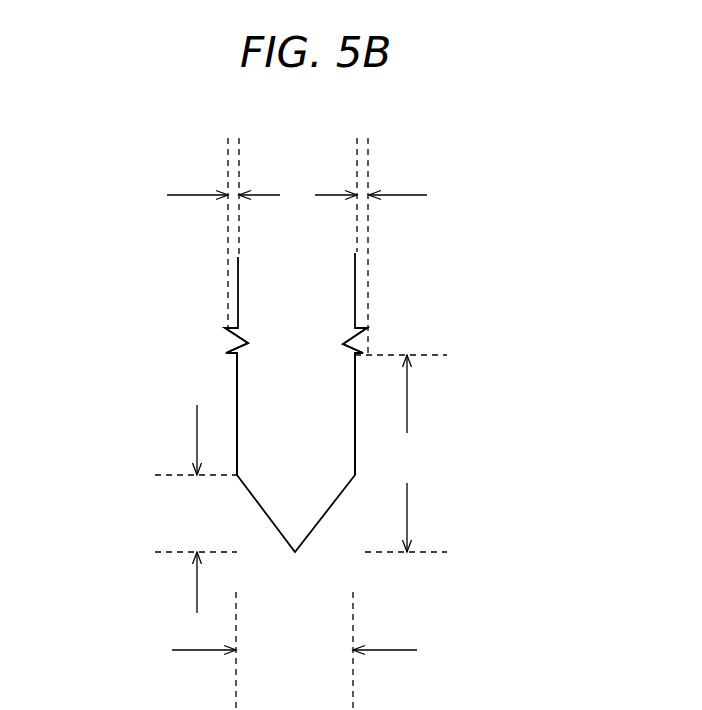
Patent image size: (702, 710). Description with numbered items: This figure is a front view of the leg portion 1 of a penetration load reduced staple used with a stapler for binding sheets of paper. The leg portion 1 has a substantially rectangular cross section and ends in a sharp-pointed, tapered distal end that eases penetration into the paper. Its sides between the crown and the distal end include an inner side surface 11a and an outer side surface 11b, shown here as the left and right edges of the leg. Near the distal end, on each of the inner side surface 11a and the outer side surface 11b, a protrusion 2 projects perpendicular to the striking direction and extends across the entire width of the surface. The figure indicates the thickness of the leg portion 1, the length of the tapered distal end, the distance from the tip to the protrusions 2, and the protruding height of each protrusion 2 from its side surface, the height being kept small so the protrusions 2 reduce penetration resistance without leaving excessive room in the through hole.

The leg portion 1 is at (403, 278).
The protrusion 2 is at (230, 350).
The inner side surface 11a is at (237, 397).
The outer side surface 11b is at (355, 437).